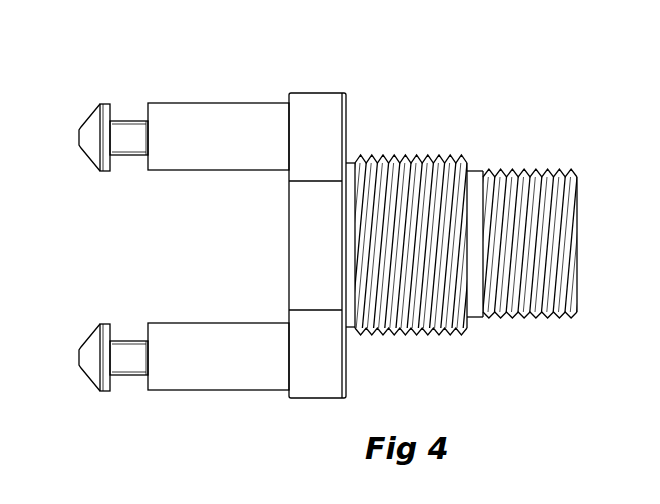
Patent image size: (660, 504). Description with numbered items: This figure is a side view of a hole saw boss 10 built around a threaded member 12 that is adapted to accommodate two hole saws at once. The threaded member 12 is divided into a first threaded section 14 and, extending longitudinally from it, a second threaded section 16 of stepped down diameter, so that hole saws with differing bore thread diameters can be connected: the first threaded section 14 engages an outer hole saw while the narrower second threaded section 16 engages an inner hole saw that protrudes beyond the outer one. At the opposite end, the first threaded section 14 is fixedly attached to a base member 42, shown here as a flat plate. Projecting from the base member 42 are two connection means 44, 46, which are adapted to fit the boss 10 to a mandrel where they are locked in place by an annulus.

The hole saw boss 10 is at (334, 233).
The threaded member 12 is at (464, 197).
The first threaded section 14 is at (427, 180).
The second threaded section 16 is at (518, 188).
The base member 42 is at (305, 133).
The connection means 44 is at (197, 365).
The connection means 46 is at (207, 132).